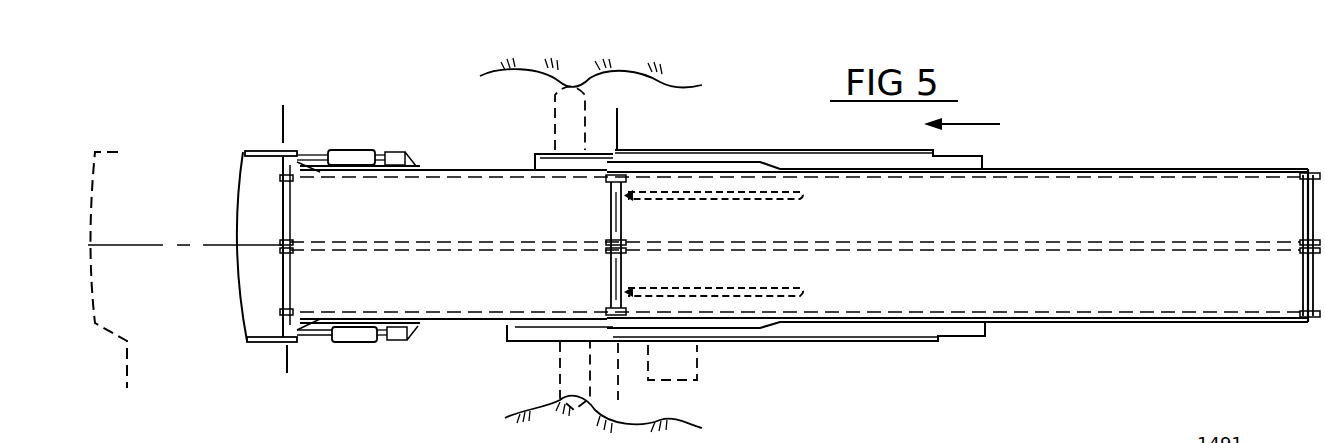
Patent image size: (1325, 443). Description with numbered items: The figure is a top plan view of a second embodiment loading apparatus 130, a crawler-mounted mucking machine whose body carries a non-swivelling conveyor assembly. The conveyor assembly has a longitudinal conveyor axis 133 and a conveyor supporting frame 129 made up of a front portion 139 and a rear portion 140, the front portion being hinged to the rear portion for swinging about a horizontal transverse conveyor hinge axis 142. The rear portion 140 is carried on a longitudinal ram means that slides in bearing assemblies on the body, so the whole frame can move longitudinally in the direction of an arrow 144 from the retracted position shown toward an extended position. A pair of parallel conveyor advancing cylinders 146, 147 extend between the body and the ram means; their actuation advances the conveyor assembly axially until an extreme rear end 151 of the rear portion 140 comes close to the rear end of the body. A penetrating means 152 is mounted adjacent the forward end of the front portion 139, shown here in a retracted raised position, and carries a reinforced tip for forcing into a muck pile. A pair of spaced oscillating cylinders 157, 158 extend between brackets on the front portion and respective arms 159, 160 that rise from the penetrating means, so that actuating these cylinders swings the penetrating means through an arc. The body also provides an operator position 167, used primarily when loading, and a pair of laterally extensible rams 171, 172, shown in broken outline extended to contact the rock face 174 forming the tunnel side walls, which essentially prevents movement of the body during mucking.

The conveyor supporting frame 129 is at (1098, 325).
The loading apparatus 130 is at (1076, 354).
The longitudinal conveyor axis 133 is at (1125, 243).
The front portion 139 is at (463, 167).
The rear portion 140 is at (1097, 171).
The conveyor hinge axis 142 is at (618, 137).
The arrow 144 is at (965, 123).
The conveyor advancing cylinder 146 is at (768, 288).
The conveyor advancing cylinder 147 is at (768, 200).
The extreme rear end 151 is at (1237, 323).
The penetrating means 152 is at (100, 318).
The oscillating cylinder 157 is at (350, 337).
The oscillating cylinder 158 is at (352, 151).
The arm 159 is at (293, 345).
The arm 160 is at (290, 150).
The operator position 167 is at (697, 380).
The laterally extensible ram 171 is at (560, 380).
The laterally extensible ram 172 is at (560, 130).
The rock face 174 is at (700, 85).